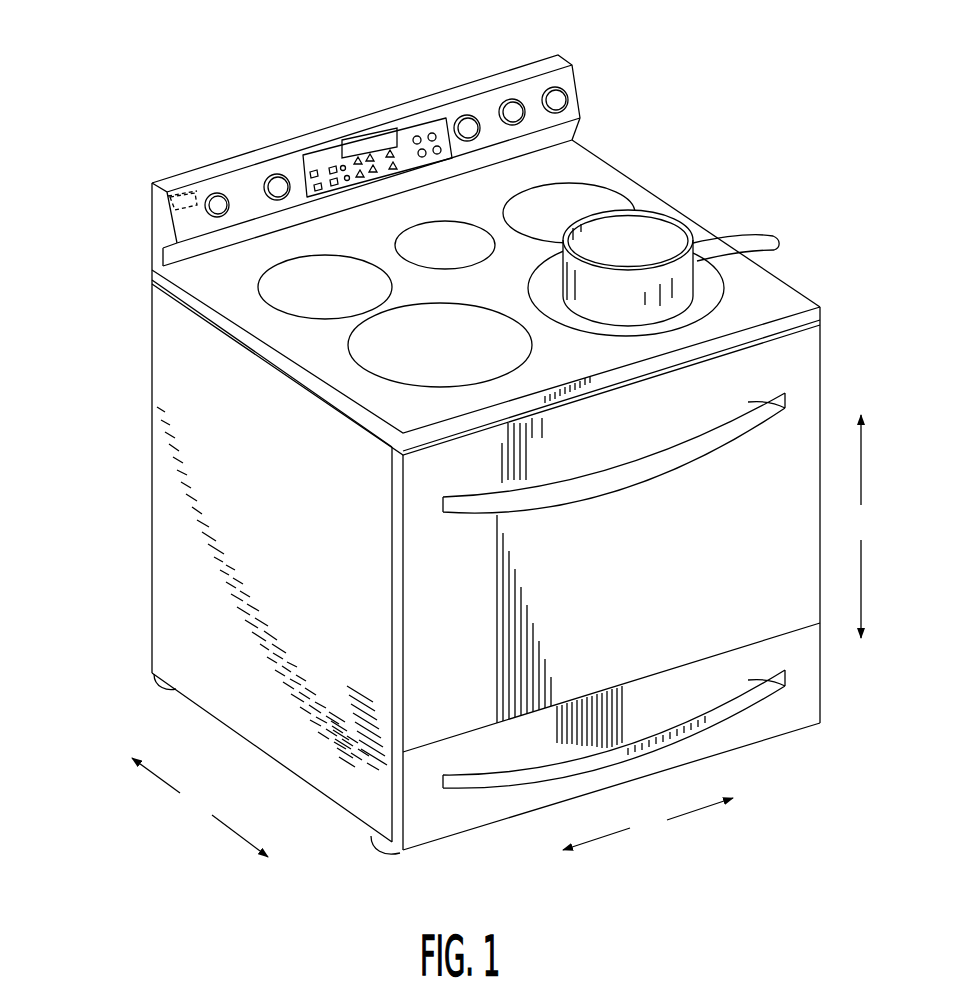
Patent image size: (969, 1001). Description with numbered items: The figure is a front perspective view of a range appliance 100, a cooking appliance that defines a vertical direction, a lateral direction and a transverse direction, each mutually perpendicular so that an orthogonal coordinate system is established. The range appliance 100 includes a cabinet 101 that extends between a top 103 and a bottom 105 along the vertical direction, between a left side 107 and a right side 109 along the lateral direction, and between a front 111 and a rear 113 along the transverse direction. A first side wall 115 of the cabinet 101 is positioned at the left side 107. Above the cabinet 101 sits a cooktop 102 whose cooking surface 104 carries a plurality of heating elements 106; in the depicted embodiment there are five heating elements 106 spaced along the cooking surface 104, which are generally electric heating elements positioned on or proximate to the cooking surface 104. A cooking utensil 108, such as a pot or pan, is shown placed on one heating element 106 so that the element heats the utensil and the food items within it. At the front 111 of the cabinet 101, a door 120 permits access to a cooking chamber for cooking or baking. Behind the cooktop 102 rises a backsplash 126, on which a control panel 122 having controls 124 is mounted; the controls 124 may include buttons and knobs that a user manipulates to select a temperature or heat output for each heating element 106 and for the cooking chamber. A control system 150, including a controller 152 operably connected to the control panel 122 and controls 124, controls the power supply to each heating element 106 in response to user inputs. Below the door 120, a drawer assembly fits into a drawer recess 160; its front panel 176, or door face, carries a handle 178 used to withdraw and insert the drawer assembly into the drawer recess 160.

The range appliance 100 is at (165, 58).
The cabinet 101 is at (130, 548).
The cooktop 102 is at (687, 100).
The top 103 is at (185, 311).
The cooking surface 104 is at (298, 337).
The bottom 105 is at (205, 713).
The heating element 106 is at (342, 272).
The left side 107 is at (205, 605).
The cooking utensil 108 is at (667, 235).
The right side 109 is at (834, 389).
The front 111 is at (407, 637).
The rear 113 is at (140, 488).
The first side wall 115 is at (295, 534).
The door 120 is at (633, 606).
The control panel 122 is at (482, 107).
The controls 124 is at (330, 165).
The backsplash 126 is at (160, 230).
The control system 150 is at (187, 193).
The controller 152 is at (172, 193).
The drawer recess 160 is at (470, 813).
The front panel 176 is at (812, 688).
The handle 178 is at (727, 717).